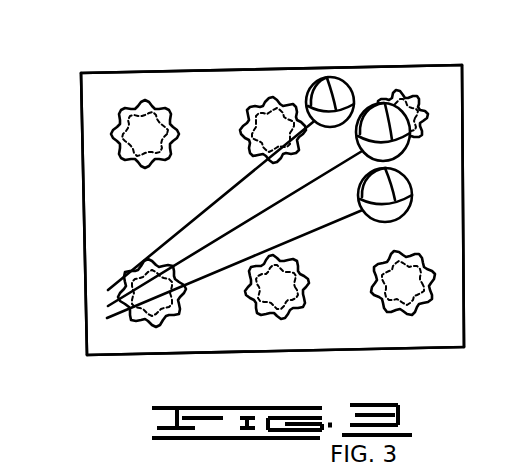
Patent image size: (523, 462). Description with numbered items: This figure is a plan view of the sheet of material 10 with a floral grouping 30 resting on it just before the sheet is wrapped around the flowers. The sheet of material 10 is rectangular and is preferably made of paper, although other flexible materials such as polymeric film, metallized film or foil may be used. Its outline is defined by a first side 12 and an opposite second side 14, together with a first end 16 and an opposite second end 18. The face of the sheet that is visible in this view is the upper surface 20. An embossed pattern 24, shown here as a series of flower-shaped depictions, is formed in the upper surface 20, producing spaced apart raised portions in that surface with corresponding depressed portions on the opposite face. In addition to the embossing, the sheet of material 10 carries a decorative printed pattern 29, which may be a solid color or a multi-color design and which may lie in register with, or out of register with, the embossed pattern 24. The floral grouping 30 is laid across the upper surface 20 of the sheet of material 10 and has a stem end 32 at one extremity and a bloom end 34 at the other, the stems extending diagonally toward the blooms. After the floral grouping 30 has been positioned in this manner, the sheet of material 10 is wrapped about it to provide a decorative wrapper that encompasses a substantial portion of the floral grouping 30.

The sheet of material 10 is at (311, 64).
The first side 12 is at (82, 217).
The second side 14 is at (462, 116).
The first end 16 is at (227, 70).
The second end 18 is at (238, 355).
The upper surface 20 is at (452, 280).
The embossed pattern 24 is at (117, 97).
The decorative printed pattern 29 is at (120, 135).
The floral grouping 30 is at (351, 81).
The stem end 32 is at (193, 285).
The bloom end 34 is at (415, 198).